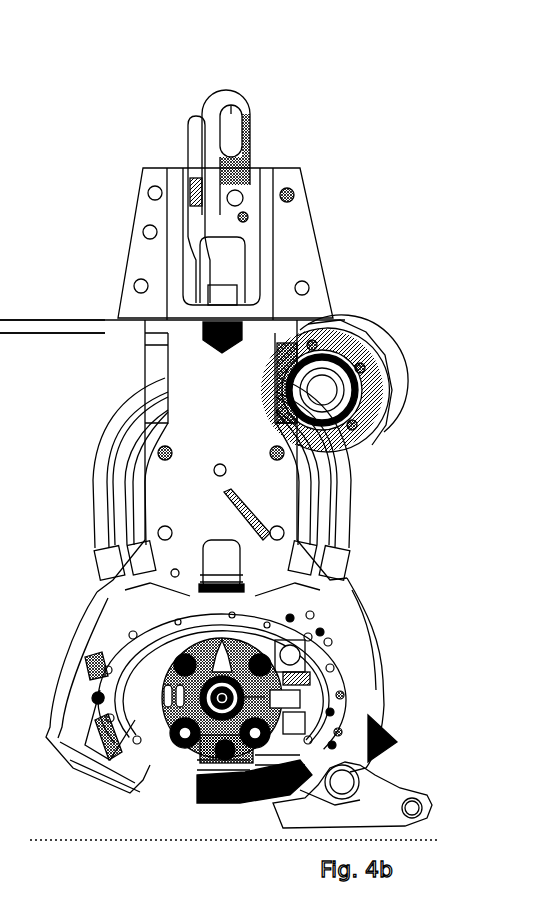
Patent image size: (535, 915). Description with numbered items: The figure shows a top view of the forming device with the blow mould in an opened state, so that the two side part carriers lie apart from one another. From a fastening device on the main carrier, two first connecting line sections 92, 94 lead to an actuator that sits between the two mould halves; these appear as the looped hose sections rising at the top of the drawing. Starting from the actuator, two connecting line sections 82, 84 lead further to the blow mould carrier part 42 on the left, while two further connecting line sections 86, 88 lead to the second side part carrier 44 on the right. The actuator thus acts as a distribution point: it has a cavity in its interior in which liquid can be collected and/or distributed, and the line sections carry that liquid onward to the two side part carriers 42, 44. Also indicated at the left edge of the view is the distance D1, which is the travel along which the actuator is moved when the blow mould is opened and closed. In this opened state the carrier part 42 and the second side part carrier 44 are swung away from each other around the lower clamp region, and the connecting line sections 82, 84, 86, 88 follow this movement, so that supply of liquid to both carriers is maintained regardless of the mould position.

The connecting line section 82 is at (118, 318).
The connecting line section 84 is at (98, 480).
The further connecting line section 86 is at (345, 333).
The further connecting line section 88 is at (378, 395).
The first connecting line section 92 is at (217, 150).
The first connecting line section 94 is at (190, 152).
The blow mould carrier part 42 is at (78, 643).
The second side part carrier 44 is at (372, 670).
The distance D1 is at (53, 330).